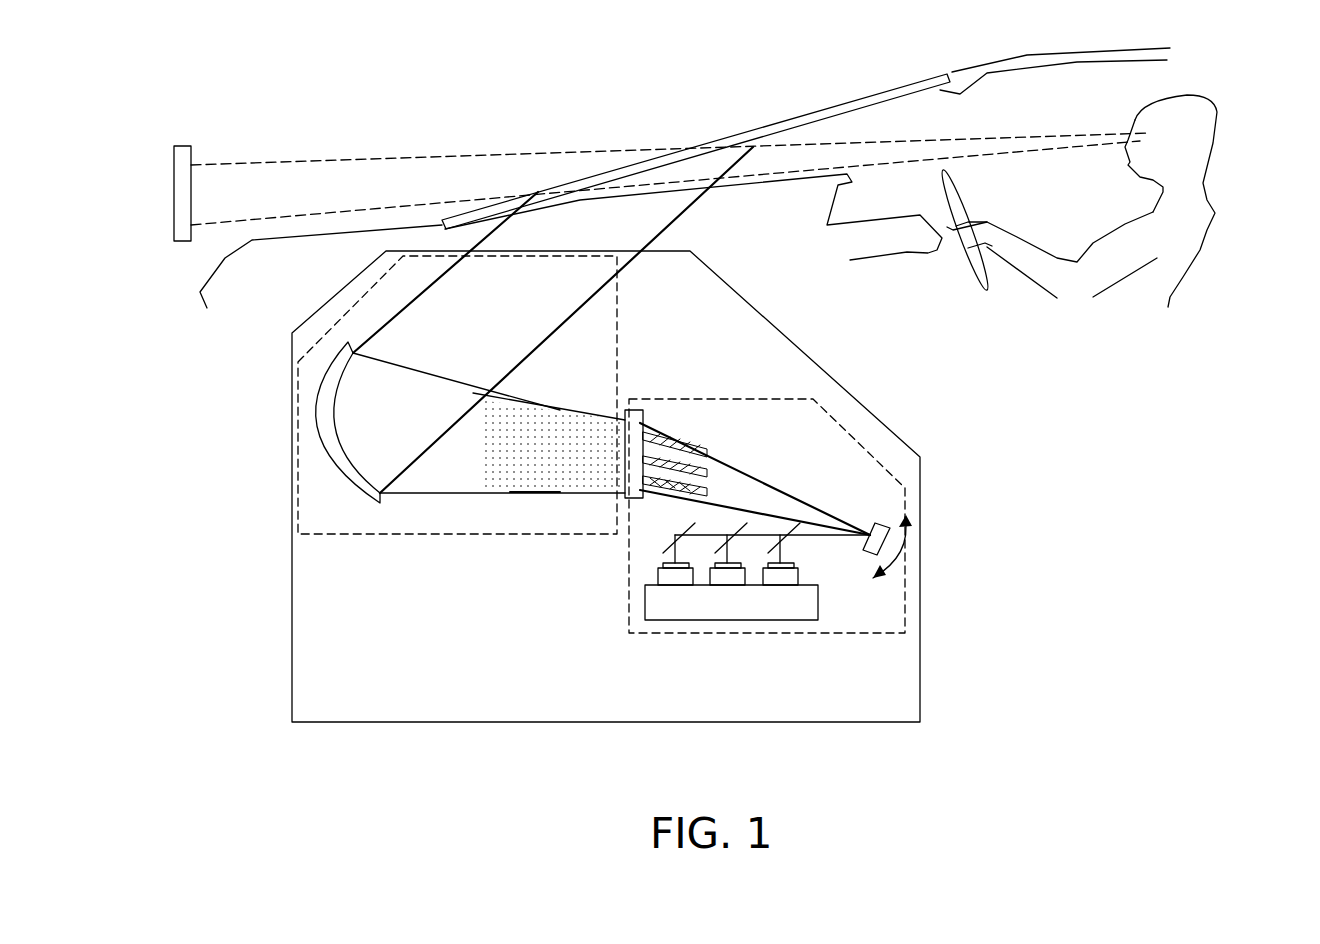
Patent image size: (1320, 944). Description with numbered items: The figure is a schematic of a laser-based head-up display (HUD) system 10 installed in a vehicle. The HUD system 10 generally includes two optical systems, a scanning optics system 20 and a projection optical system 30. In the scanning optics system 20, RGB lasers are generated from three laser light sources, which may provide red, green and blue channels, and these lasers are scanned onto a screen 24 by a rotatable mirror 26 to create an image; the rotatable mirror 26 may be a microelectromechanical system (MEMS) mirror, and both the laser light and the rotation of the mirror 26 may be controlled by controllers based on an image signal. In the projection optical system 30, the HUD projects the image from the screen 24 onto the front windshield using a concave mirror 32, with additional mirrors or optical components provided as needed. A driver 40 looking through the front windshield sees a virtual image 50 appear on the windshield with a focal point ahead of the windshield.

The laser-based head-up display (HUD) system 10 is at (870, 395).
The scanning optics system 20 is at (803, 553).
The screen 24 is at (643, 413).
The rotatable mirror 26 is at (905, 540).
The projection optical system 30 is at (491, 378).
The concave mirror 32 is at (320, 432).
The driver 40 is at (1215, 213).
The virtual image 50 is at (180, 145).